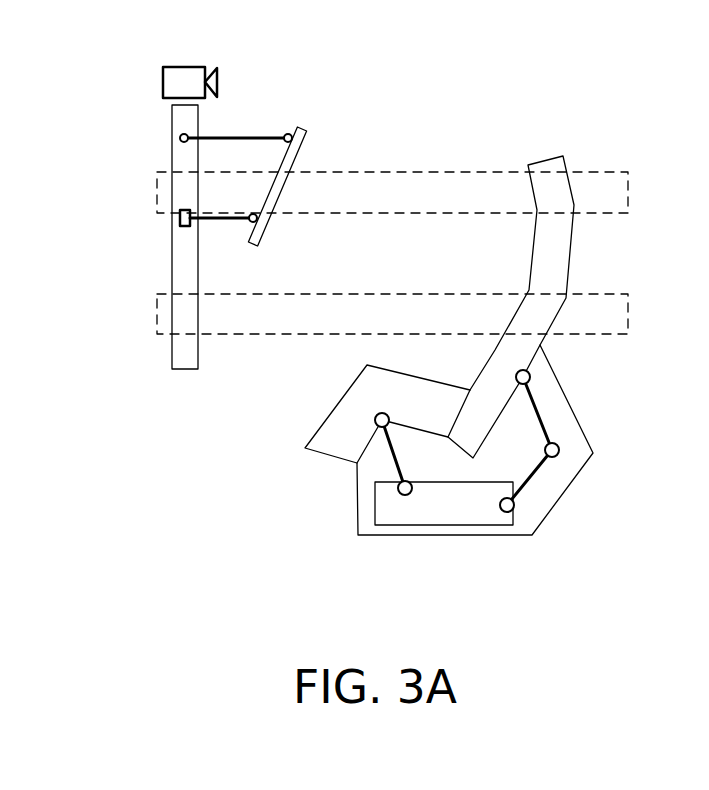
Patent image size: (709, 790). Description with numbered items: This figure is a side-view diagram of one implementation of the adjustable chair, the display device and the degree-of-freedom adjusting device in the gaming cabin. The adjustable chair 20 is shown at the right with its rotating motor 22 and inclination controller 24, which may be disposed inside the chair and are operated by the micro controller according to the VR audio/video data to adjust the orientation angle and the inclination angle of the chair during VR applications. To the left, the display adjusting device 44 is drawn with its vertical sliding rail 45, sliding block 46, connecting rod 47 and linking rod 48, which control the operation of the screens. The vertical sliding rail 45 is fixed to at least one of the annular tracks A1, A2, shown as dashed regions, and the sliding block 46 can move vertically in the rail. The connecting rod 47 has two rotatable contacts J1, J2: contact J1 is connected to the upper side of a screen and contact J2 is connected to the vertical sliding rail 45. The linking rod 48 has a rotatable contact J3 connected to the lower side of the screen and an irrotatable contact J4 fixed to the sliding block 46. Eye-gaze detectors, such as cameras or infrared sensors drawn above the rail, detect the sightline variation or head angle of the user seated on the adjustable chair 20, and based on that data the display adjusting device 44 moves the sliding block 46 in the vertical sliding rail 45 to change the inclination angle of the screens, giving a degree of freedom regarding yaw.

The adjustable chair 20 is at (563, 393).
The rotating motor 22 is at (460, 518).
The inclination controller 24 is at (533, 482).
The display adjusting device 44 is at (90, 133).
The vertical sliding rail 45 is at (182, 355).
The sliding block 46 is at (172, 228).
The connecting rod 47 is at (233, 142).
The linking rod 48 is at (227, 220).
The rotatable contact J1 is at (287, 133).
The rotatable contact J2 is at (182, 135).
The rotatable contact J3 is at (260, 223).
The irrotatable contact J4 is at (173, 208).
The annular track A1 is at (612, 190).
The annular track A2 is at (612, 312).